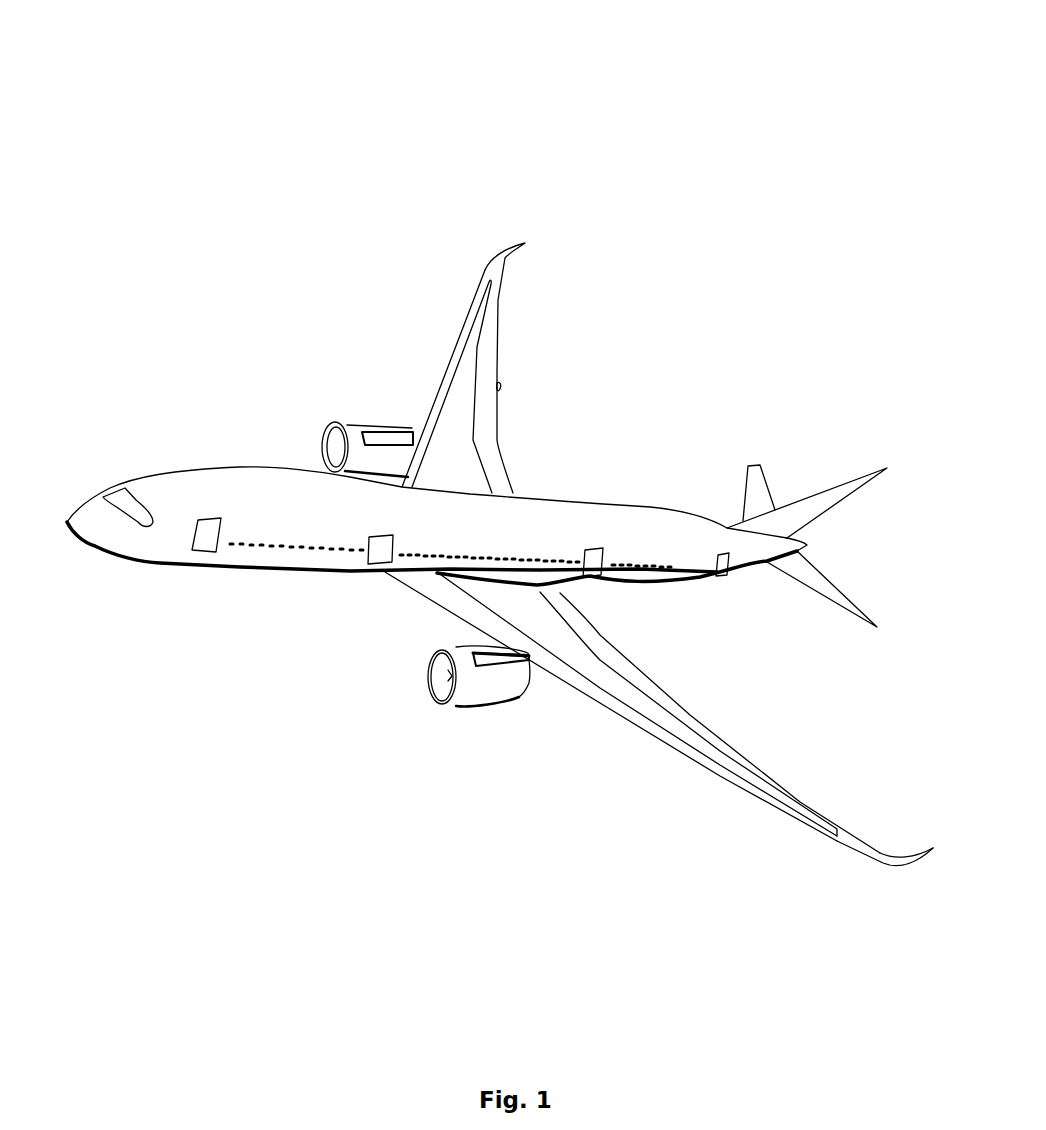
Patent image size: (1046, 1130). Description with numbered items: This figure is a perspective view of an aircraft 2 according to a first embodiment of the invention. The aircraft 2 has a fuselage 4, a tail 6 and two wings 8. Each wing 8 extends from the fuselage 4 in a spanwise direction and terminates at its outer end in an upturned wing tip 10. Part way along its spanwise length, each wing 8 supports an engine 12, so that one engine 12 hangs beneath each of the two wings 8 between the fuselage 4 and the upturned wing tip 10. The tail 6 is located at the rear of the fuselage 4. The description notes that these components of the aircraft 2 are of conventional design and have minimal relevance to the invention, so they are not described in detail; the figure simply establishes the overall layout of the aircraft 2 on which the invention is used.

The aircraft 2 is at (288, 103).
The fuselage 4 is at (292, 528).
The tail 6 is at (810, 415).
The wing 8 is at (465, 400).
The upturned wing tip 10 is at (508, 255).
The engine 12 is at (363, 448).